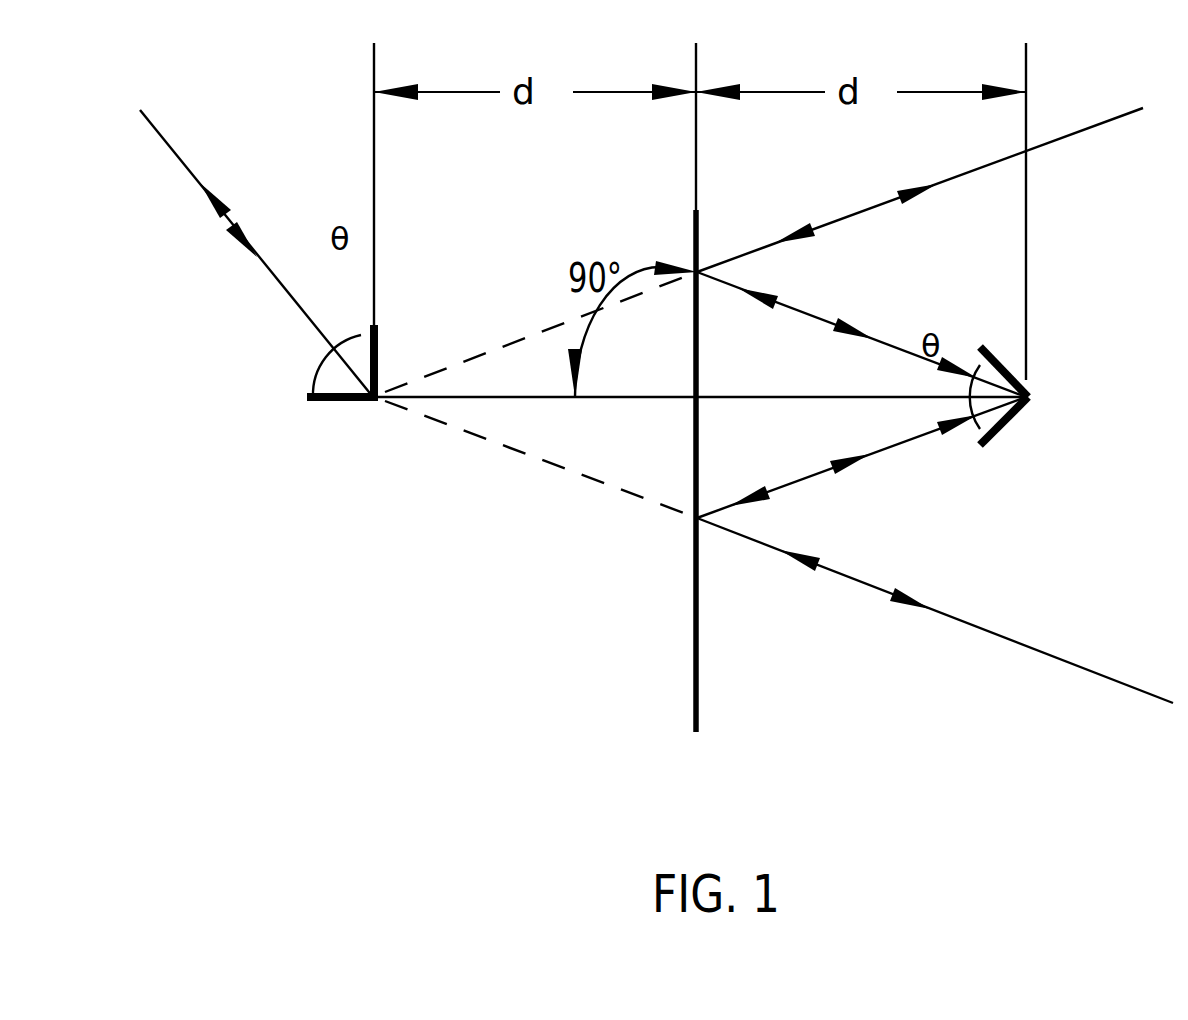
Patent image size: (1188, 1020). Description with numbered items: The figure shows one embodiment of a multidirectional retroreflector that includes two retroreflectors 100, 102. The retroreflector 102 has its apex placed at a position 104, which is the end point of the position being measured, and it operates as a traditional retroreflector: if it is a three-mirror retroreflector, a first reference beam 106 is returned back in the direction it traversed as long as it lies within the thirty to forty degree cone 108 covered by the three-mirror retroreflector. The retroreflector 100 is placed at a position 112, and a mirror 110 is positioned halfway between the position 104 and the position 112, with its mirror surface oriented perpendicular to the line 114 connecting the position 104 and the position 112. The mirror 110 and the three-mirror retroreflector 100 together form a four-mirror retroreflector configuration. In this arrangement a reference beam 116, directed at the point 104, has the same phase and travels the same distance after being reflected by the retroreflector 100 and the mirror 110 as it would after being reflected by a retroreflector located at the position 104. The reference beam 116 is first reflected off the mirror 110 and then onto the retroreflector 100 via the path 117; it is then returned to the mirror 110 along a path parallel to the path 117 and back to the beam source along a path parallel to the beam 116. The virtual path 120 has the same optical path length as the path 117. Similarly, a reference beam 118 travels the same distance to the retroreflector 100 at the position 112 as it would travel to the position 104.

The retroreflector 100 is at (1020, 413).
The retroreflector 102 is at (307, 400).
The position 104 is at (367, 385).
The first reference beam 106 is at (225, 218).
The cone 108 is at (328, 357).
The mirror 110 is at (700, 680).
The position 112 is at (985, 372).
The line 114 is at (790, 398).
The reference beam 116 is at (877, 590).
The path 117 is at (822, 472).
The reference beam 118 is at (866, 212).
The virtual path 120 is at (585, 477).